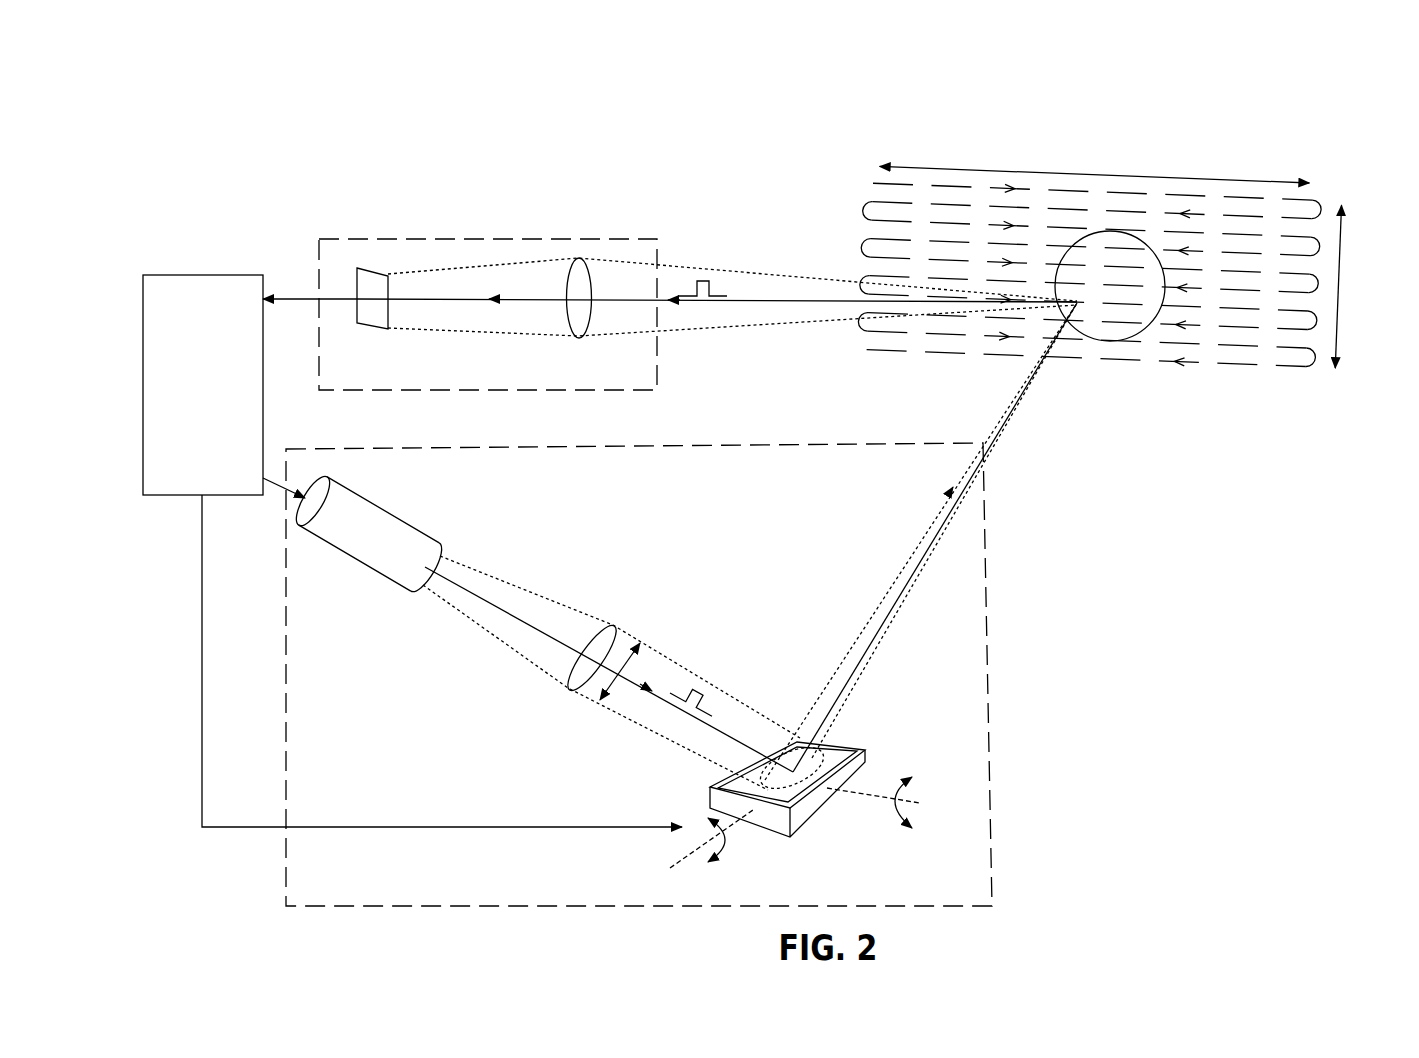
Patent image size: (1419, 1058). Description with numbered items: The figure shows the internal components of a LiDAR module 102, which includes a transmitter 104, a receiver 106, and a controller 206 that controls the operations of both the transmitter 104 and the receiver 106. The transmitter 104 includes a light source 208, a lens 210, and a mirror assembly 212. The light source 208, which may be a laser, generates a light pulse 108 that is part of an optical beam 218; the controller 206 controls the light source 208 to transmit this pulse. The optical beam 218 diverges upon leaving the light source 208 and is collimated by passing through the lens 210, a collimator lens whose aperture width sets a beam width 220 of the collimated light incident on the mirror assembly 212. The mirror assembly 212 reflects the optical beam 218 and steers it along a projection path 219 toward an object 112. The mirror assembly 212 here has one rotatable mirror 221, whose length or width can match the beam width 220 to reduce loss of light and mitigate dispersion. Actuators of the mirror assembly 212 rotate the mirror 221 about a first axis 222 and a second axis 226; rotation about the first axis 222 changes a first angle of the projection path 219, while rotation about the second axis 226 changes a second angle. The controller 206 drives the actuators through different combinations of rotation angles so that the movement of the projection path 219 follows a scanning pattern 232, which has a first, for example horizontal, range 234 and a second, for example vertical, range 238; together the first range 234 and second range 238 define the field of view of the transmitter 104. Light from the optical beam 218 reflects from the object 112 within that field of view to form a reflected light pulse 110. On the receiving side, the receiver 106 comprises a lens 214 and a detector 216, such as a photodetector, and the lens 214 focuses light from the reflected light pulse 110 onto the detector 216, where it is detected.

The LiDAR module 102 is at (243, 66).
The transmitter 104 is at (710, 449).
The receiver 106 is at (350, 239).
The light pulse 108 is at (703, 690).
The light pulse 110 is at (703, 280).
The object 112 is at (1118, 340).
The controller 206 is at (412, 551).
The light source 208 is at (362, 497).
The lens 210 is at (611, 633).
The mirror assembly 212 is at (863, 750).
The lens 214 is at (580, 336).
The detector 216 is at (362, 322).
The optical beam 218 is at (520, 590).
The projection path 219 is at (997, 412).
The beam width 220 is at (616, 692).
The mirror 221 is at (730, 778).
The first axis 222 is at (680, 862).
The second axis 226 is at (870, 798).
The scanning pattern 232 is at (1243, 366).
The first range 234 is at (1105, 175).
The second range 238 is at (1348, 292).